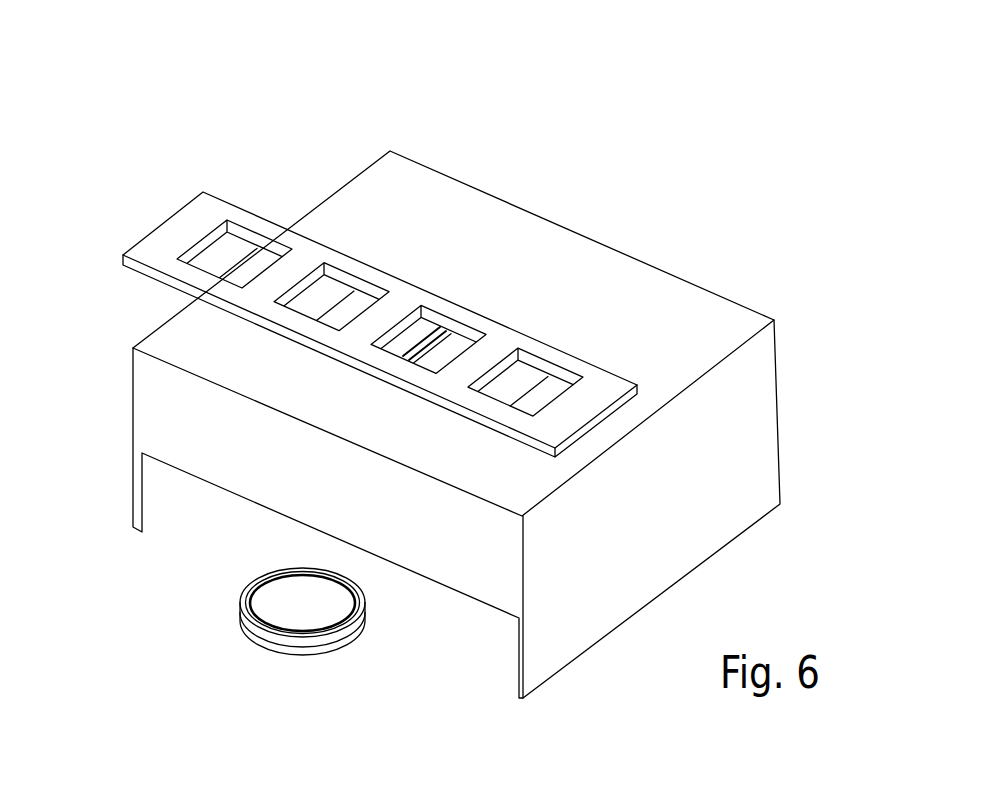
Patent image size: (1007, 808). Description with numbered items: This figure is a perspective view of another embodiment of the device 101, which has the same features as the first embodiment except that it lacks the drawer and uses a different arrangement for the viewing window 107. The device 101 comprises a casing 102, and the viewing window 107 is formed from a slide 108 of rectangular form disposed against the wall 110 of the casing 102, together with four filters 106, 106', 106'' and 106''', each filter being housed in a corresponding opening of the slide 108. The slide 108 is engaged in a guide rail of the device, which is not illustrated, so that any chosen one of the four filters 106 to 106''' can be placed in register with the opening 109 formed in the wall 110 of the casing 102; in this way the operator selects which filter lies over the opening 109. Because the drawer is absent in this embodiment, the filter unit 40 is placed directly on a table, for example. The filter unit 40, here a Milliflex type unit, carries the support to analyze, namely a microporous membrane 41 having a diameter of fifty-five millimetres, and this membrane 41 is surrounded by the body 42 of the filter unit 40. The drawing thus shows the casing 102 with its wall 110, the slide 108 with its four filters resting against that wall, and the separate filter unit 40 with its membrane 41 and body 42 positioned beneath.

The device 101 is at (162, 102).
The casing 102 is at (472, 422).
The filter 106 is at (182, 288).
The filter 106' is at (344, 277).
The filter 106'' is at (433, 352).
The filter 106''' is at (517, 410).
The viewing window 107 is at (379, 308).
The slide 108 is at (610, 378).
The opening 109 is at (418, 338).
The wall 110 is at (740, 315).
The filter unit 40 is at (279, 638).
The microporous membrane 41 is at (303, 625).
The body 42 is at (333, 650).